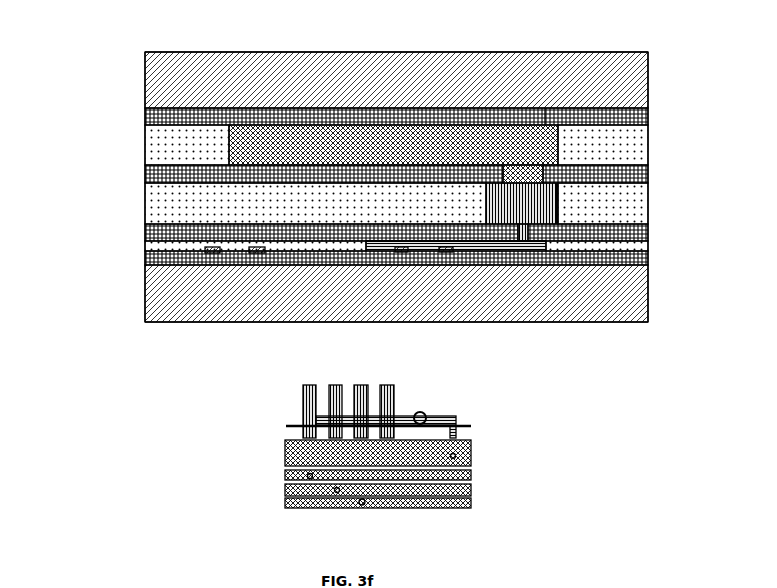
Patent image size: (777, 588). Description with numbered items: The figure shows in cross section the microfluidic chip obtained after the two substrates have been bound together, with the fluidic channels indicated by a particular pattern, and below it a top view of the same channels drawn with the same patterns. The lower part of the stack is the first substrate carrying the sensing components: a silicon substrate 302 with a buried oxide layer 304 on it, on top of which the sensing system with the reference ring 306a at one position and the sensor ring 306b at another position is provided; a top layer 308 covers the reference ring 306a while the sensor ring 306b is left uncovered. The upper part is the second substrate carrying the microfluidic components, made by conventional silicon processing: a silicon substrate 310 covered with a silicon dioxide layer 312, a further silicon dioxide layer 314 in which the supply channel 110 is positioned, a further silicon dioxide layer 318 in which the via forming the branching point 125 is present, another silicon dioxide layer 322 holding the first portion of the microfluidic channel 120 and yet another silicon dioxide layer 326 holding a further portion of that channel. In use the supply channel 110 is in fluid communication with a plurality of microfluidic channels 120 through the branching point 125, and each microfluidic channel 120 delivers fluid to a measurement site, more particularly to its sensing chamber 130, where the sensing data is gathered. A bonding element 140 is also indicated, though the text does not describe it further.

The supply channel 110 is at (497, 135).
The microfluidic channel 120 is at (495, 195).
The branching point 125 is at (352, 496).
The sensing chamber 130 is at (502, 242).
The bonding layer 140 is at (458, 440).
The silicon substrate 302 is at (387, 314).
The buried oxide layer 304 is at (172, 300).
The reference ring 306a is at (208, 243).
The sensor ring 306b is at (442, 241).
The top layer 308 is at (172, 238).
The silicon substrate 310 is at (608, 72).
The silicon dioxide layer 312 is at (183, 104).
The further silicon dioxide layer 314 is at (137, 140).
The further silicon dioxide layer 318 is at (137, 168).
The silicon dioxide layer 322 is at (137, 196).
The silicon dioxide layer 326 is at (137, 225).